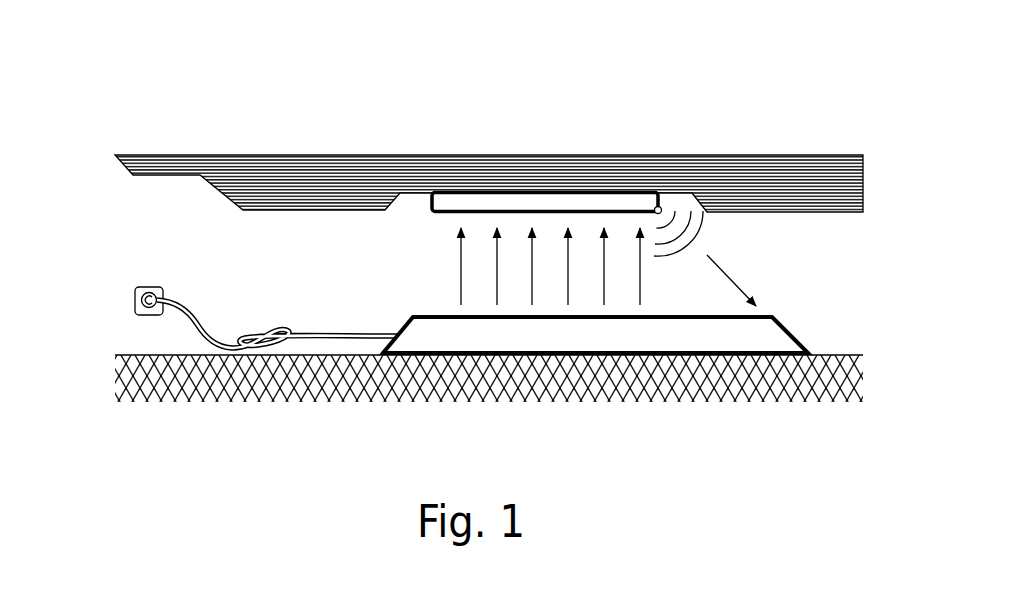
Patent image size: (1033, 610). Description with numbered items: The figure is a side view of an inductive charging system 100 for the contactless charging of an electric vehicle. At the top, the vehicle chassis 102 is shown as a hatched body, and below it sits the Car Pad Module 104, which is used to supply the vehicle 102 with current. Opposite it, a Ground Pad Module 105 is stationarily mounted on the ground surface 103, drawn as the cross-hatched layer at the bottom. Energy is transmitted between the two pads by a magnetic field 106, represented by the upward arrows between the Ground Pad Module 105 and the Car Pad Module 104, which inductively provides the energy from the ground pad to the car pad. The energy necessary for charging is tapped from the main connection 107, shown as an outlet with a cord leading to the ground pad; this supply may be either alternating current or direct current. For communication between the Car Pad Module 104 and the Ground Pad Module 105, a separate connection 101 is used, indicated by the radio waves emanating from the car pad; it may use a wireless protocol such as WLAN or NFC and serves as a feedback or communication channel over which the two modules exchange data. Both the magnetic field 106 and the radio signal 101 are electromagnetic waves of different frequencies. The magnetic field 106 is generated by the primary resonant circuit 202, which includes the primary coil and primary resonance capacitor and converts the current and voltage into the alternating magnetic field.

The inductive charging system 100 is at (220, 94).
The communication channel 101 is at (745, 272).
The vehicle chassis 102 is at (785, 155).
The ground surface 103 is at (830, 354).
The Car Pad Module 104 is at (520, 198).
The Ground Pad Module 105 is at (524, 344).
The magnetic field 106 is at (392, 273).
The main connection 107 is at (128, 271).
The primary resonant circuit 202 is at (270, 437).